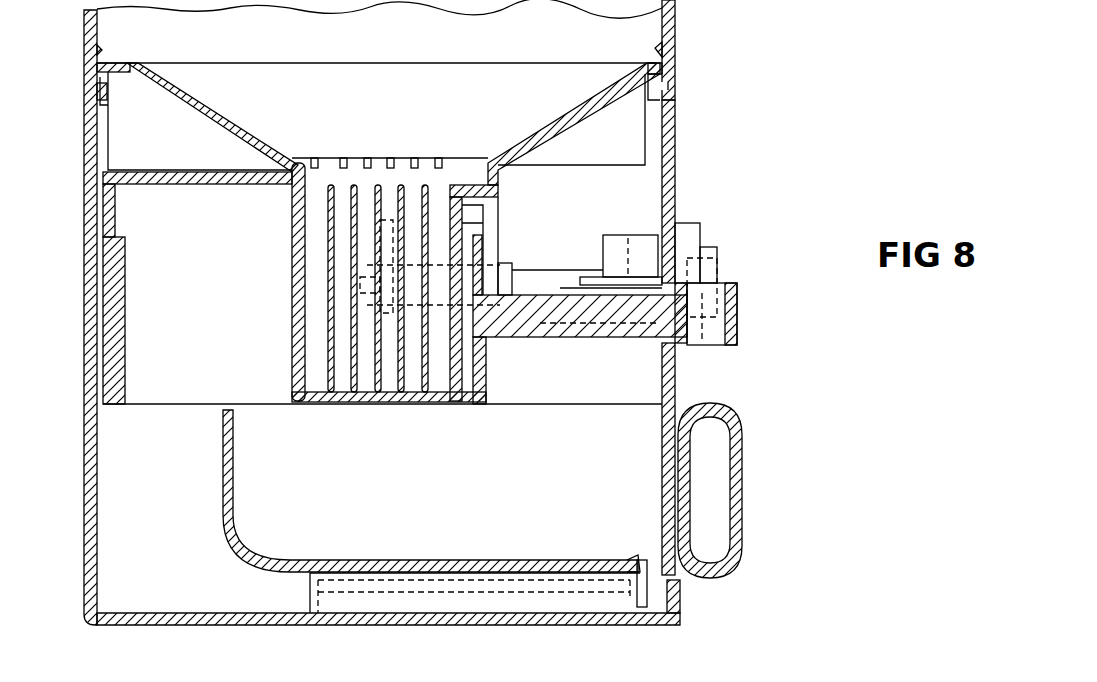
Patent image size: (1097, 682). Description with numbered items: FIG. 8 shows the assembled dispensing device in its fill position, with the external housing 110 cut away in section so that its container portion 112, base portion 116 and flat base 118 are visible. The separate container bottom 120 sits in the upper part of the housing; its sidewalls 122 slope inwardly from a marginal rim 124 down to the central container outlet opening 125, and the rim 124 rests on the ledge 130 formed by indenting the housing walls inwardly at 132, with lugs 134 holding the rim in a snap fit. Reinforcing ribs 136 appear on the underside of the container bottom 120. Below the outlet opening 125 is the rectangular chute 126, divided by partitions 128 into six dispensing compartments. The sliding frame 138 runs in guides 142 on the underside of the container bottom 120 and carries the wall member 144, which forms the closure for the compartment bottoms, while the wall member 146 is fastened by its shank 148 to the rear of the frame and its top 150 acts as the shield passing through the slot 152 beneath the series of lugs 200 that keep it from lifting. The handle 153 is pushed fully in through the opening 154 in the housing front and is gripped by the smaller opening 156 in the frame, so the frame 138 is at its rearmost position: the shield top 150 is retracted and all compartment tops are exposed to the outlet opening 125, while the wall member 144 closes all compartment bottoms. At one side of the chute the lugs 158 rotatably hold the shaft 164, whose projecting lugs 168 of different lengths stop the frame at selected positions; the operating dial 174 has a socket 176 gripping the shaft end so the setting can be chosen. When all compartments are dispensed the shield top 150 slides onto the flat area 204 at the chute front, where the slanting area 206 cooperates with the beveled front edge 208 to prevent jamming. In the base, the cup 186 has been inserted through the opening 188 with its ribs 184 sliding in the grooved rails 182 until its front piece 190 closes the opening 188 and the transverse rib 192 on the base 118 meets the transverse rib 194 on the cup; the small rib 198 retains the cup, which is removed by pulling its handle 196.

The external housing 110 is at (84, 20).
The container portion 112 is at (676, 16).
The base portion 116 is at (676, 175).
The base 118 is at (196, 620).
The container bottom 120 is at (415, 60).
The sidewalls 122 is at (404, 95).
The marginal rim 124 is at (99, 64).
The container outlet opening 125 is at (352, 158).
The chute 126 is at (367, 280).
The partitions 128 is at (381, 394).
The ledge 130 is at (661, 72).
The indentation 132 is at (668, 86).
The lugs 134 is at (655, 45).
The reinforcing ribs 136 is at (160, 130).
The sliding frame 138 is at (126, 352).
The guides 142 is at (492, 216).
The wall member 144 is at (415, 400).
The wall member 146 is at (106, 182).
The shank 148 is at (112, 288).
The top 150 is at (222, 172).
The slot 152 is at (298, 163).
The handle 153 is at (738, 322).
The opening 154 is at (662, 338).
The opening 156 is at (487, 340).
The lugs 158 is at (494, 250).
The shaft 164 is at (520, 290).
The lugs 168 is at (598, 280).
The operating dial 174 is at (695, 228).
The socket 176 is at (700, 258).
The grooved rails 182 is at (410, 595).
The ribs 184 is at (296, 573).
The cup 186 is at (223, 470).
The opening 188 is at (680, 612).
The front piece 190 is at (673, 406).
The transverse rib 192 is at (628, 582).
The transverse rib 194 is at (643, 560).
The handle 196 is at (742, 483).
The small rib 198 is at (628, 560).
The lugs 200 is at (414, 159).
The flat area 204 is at (462, 185).
The slanting area 206 is at (500, 173).
The beveled front edge 208 is at (297, 206).